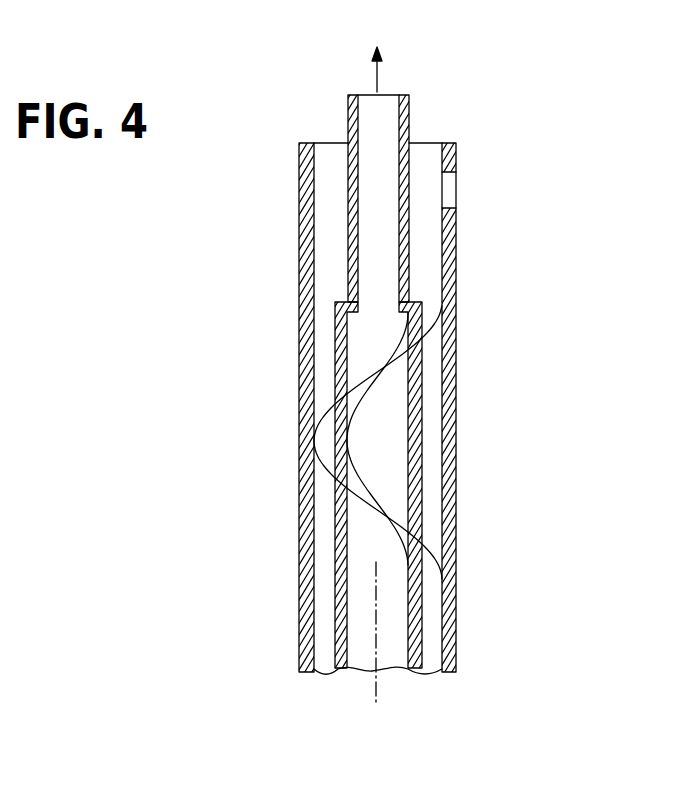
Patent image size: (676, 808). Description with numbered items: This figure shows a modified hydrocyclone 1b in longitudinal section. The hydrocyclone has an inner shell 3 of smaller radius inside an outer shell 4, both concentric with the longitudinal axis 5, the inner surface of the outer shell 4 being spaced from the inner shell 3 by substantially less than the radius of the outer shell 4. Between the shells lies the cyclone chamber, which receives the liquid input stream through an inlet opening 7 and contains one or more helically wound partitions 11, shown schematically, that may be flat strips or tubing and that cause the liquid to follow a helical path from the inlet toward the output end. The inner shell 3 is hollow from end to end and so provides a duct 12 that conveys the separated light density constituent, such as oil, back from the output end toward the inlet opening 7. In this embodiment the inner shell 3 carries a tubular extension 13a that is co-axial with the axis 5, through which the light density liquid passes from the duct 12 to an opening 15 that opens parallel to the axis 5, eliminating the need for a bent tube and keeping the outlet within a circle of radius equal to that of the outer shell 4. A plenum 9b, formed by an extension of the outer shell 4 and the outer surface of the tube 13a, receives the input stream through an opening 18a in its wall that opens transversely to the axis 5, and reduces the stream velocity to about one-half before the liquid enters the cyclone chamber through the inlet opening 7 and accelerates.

The hydrocyclone 1b is at (474, 378).
The inner shell 3 is at (422, 512).
The outer shell 4 is at (456, 622).
The longitudinal axis 5 is at (370, 682).
The inlet opening 7 is at (322, 303).
The plenum 9b is at (326, 193).
The helically wound partitions 11 is at (321, 442).
The duct 12 is at (358, 612).
The tubular extension 13a is at (340, 116).
The opening 15 is at (387, 102).
The opening 18a is at (457, 194).